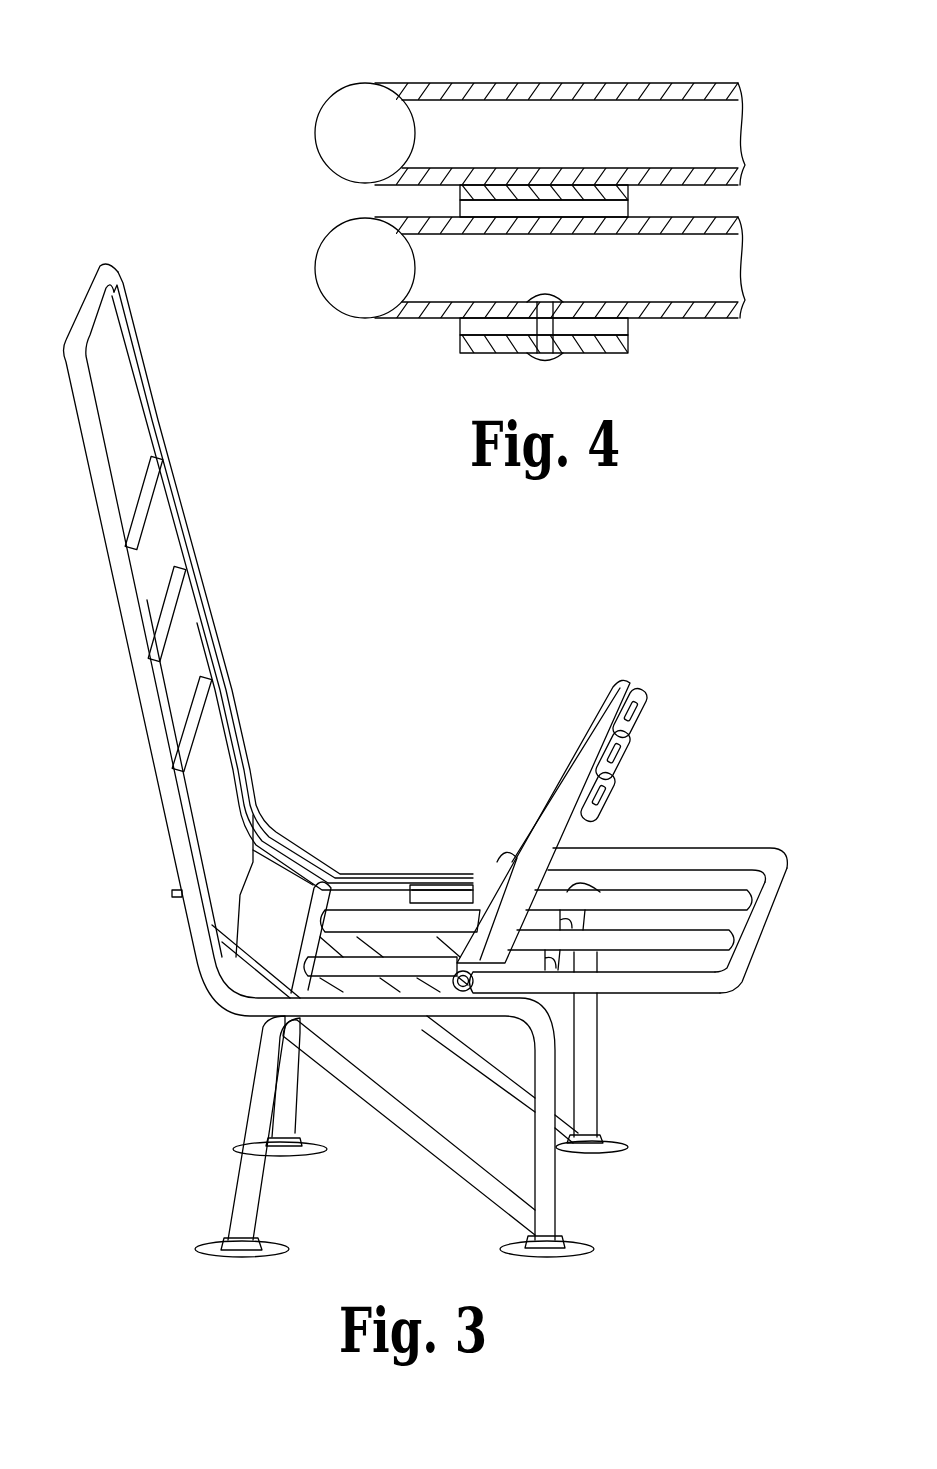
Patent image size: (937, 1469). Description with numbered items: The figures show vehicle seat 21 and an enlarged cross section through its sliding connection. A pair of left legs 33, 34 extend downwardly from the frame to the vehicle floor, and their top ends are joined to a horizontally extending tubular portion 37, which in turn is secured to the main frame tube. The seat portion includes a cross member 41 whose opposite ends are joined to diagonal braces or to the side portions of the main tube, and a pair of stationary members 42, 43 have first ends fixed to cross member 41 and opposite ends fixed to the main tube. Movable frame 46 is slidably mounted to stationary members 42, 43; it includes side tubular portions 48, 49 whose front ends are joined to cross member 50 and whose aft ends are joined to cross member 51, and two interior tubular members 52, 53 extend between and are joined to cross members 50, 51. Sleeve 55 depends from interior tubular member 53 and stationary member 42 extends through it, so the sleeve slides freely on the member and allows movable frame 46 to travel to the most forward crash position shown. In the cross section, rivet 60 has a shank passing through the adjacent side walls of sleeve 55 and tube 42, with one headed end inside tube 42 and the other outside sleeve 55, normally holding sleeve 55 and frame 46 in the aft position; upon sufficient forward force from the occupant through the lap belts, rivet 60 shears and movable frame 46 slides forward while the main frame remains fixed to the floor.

In FIG. 3, the seat 21 is at (130, 811).
In FIG. 3, the left leg 33 is at (243, 1184).
In FIG. 3, the left leg 34 is at (552, 1179).
In FIG. 3, the horizontally extending tubular portion 37 is at (345, 985).
In FIG. 4, the cross member 41 is at (330, 300).
In FIG. 3, the cross member 41 is at (297, 938).
In FIG. 4, the stationary member 42 is at (728, 212).
In FIG. 3, the stationary member 42 is at (360, 912).
In FIG. 3, the stationary member 43 is at (400, 957).
In FIG. 3, the movable frame 46 is at (651, 917).
In FIG. 3, the side tubular portion 48 is at (640, 988).
In FIG. 3, the side tubular portion 49 is at (635, 848).
In FIG. 3, the cross member 50 is at (768, 908).
In FIG. 4, the cross member 51 is at (340, 93).
In FIG. 3, the cross member 51 is at (500, 866).
In FIG. 3, the interior tubular member 52 is at (658, 945).
In FIG. 4, the interior tubular member 53 is at (650, 83).
In FIG. 3, the interior tubular member 53 is at (693, 890).
In FIG. 4, the sleeve 55 is at (628, 197).
In FIG. 4, the rivet 60 is at (545, 361).